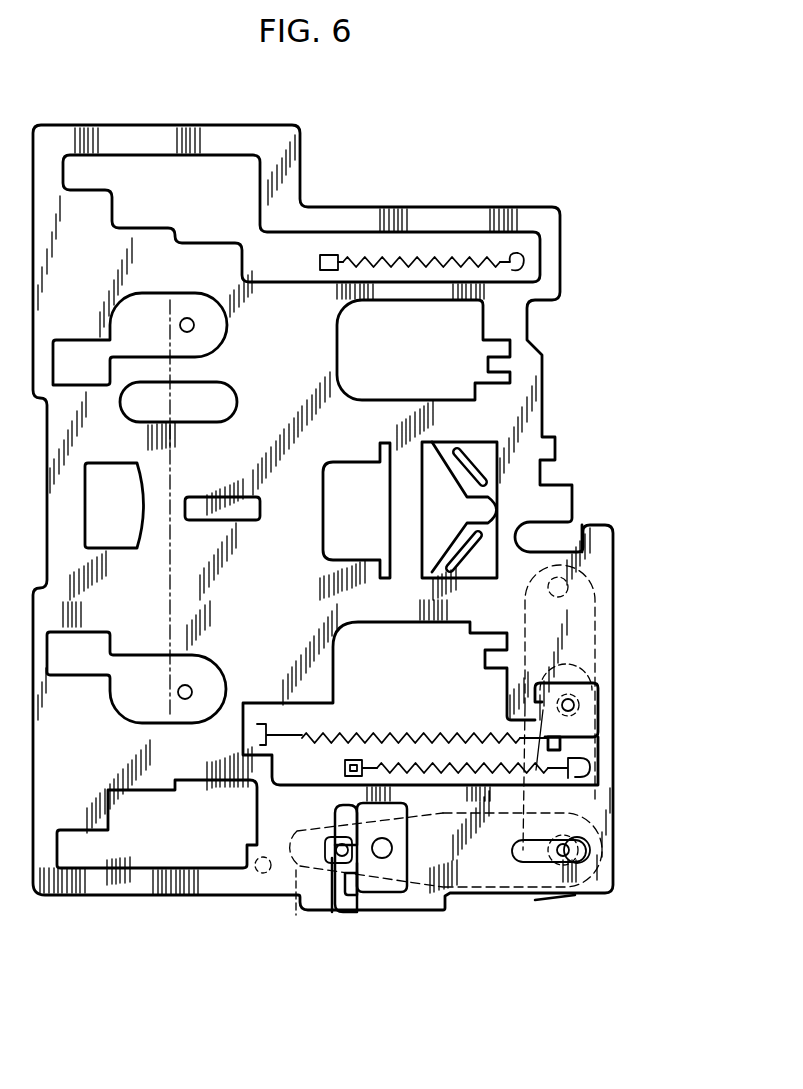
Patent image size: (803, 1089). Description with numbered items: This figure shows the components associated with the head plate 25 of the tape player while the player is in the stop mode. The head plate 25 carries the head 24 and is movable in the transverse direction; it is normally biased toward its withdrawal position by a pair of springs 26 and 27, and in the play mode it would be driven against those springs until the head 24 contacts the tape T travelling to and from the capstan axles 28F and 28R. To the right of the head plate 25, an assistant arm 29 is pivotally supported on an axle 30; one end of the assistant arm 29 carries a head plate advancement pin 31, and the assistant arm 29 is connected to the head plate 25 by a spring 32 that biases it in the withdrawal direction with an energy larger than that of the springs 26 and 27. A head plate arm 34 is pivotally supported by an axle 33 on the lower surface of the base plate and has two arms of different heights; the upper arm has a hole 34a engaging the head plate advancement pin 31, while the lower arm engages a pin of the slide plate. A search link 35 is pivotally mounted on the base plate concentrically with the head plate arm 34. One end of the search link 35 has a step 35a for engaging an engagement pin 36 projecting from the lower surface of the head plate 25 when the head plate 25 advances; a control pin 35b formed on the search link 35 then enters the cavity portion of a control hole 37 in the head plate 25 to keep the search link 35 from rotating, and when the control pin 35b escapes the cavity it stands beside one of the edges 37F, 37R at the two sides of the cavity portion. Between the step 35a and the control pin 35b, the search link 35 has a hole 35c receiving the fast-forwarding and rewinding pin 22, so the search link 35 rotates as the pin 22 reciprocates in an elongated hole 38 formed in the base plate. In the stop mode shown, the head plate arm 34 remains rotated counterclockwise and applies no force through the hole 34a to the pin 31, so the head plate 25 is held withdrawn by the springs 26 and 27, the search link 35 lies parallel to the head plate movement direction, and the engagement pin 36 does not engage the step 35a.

The head plate 25 is at (300, 130).
The spring 26 is at (453, 255).
The capstan axle 28R is at (194, 325).
The capstan axle 28F is at (192, 690).
The tape T is at (175, 445).
The head 24 is at (115, 478).
The axle 30 is at (570, 592).
The assistant arm 29 is at (580, 620).
The hole 34a is at (595, 683).
The head plate advancement pin 31 is at (576, 704).
The spring 32 is at (412, 738).
The spring 27 is at (432, 772).
The head plate arm 34 is at (600, 812).
The rear arm of slider 37R is at (342, 812).
The hole 35c is at (333, 838).
The engagement pin 36 is at (259, 875).
The step 35a is at (286, 910).
The fast-forwarding and rewinding pin 22 is at (327, 905).
The elongated hole 38 is at (340, 905).
The edge 37F is at (353, 888).
The control hole 37 is at (383, 888).
The control pin 35b is at (390, 852).
The search link 35 is at (493, 870).
The axle 33 is at (563, 858).